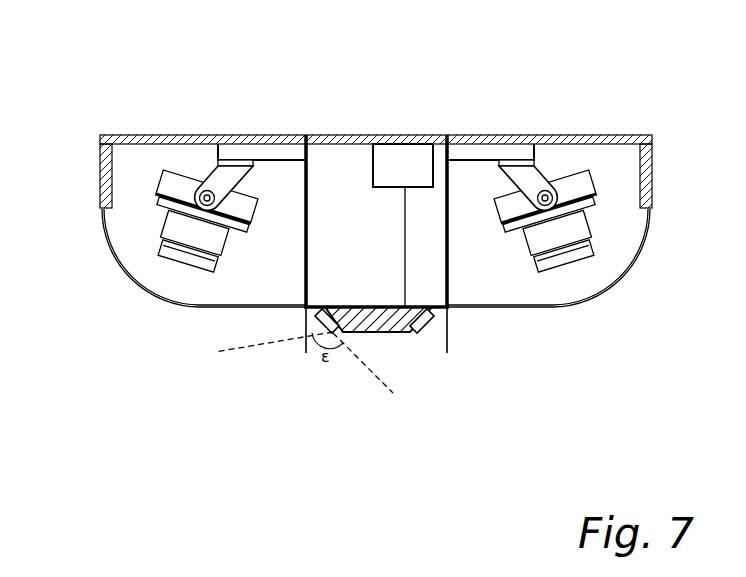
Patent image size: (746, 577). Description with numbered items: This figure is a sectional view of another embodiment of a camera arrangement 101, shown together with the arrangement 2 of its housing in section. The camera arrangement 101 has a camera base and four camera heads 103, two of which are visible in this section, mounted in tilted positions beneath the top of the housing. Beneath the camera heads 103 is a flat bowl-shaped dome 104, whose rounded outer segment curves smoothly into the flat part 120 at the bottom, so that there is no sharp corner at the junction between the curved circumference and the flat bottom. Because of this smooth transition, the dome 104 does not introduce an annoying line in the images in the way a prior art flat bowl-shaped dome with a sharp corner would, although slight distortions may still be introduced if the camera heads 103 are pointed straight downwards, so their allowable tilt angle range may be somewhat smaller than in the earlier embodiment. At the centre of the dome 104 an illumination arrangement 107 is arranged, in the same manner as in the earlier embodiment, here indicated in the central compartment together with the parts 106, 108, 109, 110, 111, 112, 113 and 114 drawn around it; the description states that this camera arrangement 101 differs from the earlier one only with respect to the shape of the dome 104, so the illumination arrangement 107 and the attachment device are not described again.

The luminaire housing 2 is at (98, 177).
The camera arrangement 101 is at (532, 351).
The camera head 103 is at (185, 258).
The flat bowl-shaped dome 104 is at (623, 275).
The mounting bracket 106 is at (293, 163).
The illumination arrangement 107 is at (391, 347).
The window holder 108 is at (432, 336).
The partition wall 109 is at (310, 348).
The cable 110 is at (405, 206).
The control unit 111 is at (415, 156).
The central compartment 112 is at (377, 96).
The compartment wall 113 is at (308, 186).
The partition 114 is at (304, 145).
The flat part of the dome 120 is at (530, 308).